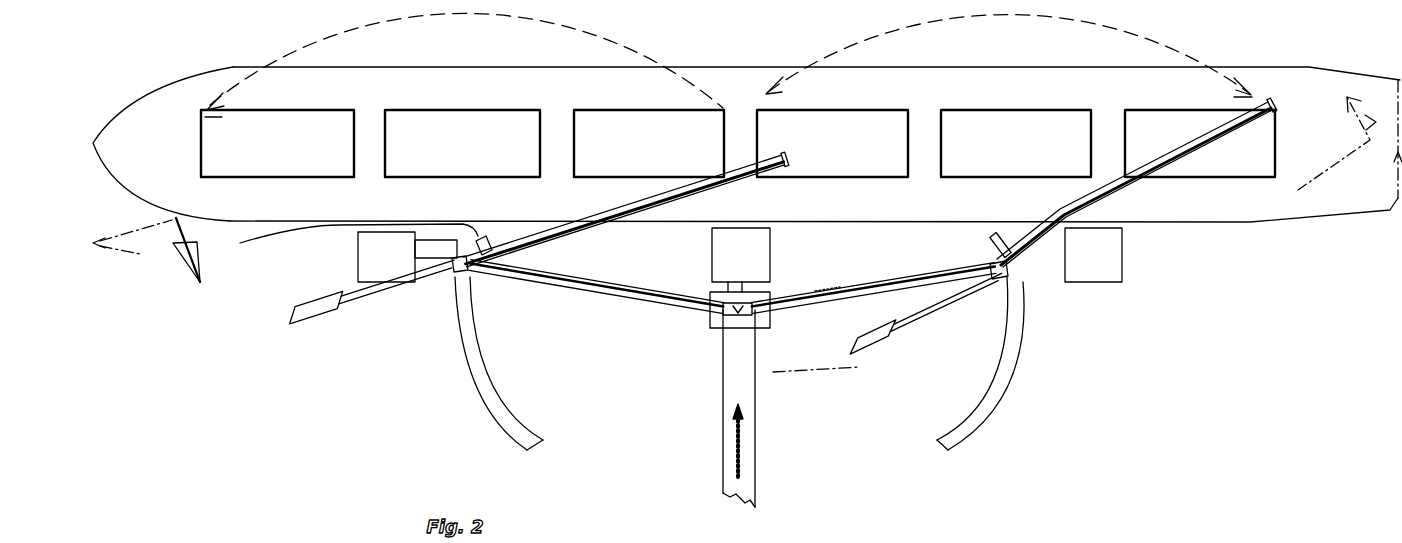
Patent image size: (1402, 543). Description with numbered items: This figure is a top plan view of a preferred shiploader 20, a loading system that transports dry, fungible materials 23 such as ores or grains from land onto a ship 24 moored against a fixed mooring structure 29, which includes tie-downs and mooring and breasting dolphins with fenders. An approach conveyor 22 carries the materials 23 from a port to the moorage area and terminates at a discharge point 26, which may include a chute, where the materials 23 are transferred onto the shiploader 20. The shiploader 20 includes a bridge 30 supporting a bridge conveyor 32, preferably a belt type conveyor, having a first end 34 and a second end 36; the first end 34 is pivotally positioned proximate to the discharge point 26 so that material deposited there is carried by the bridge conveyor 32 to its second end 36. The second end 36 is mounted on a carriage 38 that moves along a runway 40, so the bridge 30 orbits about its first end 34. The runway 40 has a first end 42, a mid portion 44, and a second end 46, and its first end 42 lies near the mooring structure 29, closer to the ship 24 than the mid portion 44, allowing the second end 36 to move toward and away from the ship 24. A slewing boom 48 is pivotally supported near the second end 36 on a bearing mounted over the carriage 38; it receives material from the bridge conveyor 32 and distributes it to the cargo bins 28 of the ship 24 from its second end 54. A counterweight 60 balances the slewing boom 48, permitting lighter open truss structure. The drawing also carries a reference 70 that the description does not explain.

The shiploader 20 is at (305, 425).
The approach conveyor 22 is at (755, 473).
The fungible materials 23 is at (530, 275).
The ship 24 is at (1340, 217).
The discharge point 26 is at (737, 320).
The cargo bins 28 is at (292, 152).
The mooring structure 29 is at (357, 277).
The bridge 30 is at (663, 308).
The bridge conveyor 32 is at (617, 295).
The first end of the bridge conveyor 34 is at (713, 318).
The second end of the bridge conveyor 36 is at (990, 255).
The carriage 38 is at (443, 287).
The runway 40 is at (477, 400).
The first end of the runway 42 is at (740, 199).
The mid portion of the runway 44 is at (463, 367).
The second end of the runway 46 is at (520, 447).
The slewing boom 48 is at (642, 200).
The second end of the slewing boom 54 is at (747, 167).
The counterweight 60 is at (290, 322).
The floor attachment 70 is at (712, 541).